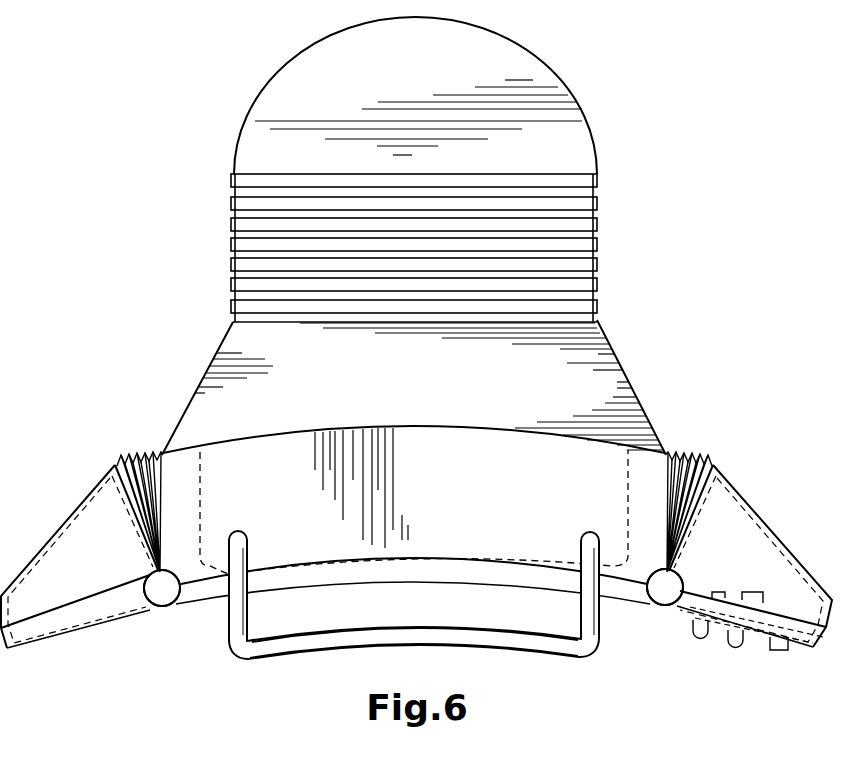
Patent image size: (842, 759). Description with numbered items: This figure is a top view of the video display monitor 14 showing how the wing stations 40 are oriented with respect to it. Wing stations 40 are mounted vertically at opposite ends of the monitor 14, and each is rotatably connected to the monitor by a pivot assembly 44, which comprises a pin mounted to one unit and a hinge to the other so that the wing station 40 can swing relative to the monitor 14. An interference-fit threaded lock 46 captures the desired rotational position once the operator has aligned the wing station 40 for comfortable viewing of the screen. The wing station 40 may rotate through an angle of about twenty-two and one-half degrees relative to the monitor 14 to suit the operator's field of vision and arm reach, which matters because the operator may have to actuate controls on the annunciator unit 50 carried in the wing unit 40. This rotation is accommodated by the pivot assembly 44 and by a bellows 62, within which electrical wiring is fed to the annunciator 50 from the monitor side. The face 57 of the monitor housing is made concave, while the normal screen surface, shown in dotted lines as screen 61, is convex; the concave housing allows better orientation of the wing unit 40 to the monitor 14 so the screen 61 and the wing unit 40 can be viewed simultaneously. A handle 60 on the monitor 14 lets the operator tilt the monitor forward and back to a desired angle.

The VDM monitor 14 is at (330, 167).
The wing station 40 is at (68, 518).
The pivot assembly 44 is at (163, 610).
The threaded lock 46 is at (157, 592).
The annunciator unit 50 is at (734, 650).
The face of the monitor housing 57 is at (287, 597).
The handle 60 is at (495, 637).
The screen 61 is at (560, 562).
The bellows 62 is at (148, 458).